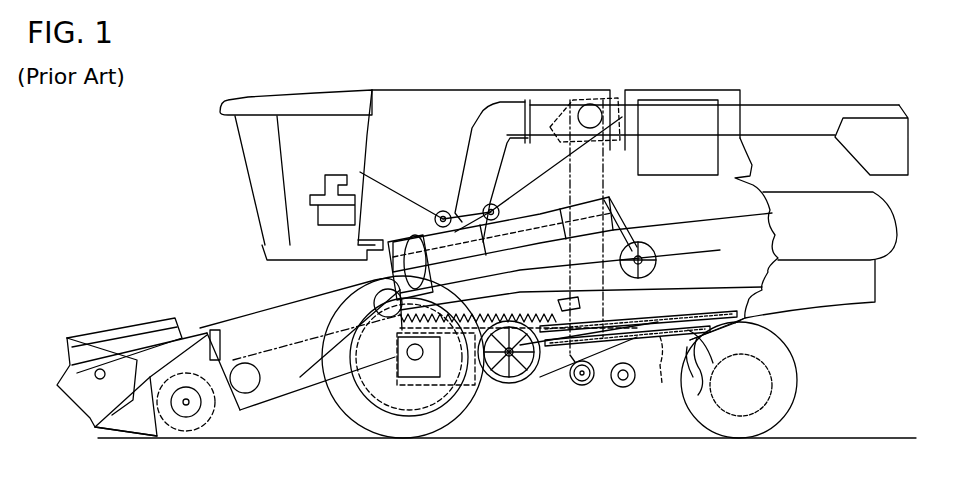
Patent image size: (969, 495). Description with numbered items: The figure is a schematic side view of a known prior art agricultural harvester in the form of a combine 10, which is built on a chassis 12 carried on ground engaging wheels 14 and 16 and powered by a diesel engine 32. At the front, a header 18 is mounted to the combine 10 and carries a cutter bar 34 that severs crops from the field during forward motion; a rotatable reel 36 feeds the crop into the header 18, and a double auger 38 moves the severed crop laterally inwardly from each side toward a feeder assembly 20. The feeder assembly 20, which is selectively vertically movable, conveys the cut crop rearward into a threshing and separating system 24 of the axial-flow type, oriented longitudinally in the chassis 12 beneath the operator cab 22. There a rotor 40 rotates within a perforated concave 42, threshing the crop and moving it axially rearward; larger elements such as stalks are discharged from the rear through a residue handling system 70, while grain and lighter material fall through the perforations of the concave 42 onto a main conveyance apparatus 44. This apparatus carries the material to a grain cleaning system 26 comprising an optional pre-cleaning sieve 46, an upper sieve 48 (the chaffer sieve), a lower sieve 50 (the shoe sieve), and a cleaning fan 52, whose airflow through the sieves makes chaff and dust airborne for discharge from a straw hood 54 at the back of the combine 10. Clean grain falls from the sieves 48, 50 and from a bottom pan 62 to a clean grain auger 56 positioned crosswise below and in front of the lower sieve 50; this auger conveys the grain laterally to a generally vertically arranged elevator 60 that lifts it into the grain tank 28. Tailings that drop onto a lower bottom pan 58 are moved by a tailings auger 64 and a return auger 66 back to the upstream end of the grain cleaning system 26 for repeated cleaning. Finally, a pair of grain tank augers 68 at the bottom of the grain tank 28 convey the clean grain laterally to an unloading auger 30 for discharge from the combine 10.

The combine 10 is at (296, 93).
The chassis 12 is at (750, 323).
The ground engaging wheel 14 is at (347, 410).
The ground engaging wheel 16 is at (797, 395).
The header 18 is at (130, 322).
The feeder assembly 20 is at (273, 322).
The operator cab 22 is at (246, 163).
The threshing and separating system 24 is at (350, 277).
The grain cleaning system 26 is at (554, 393).
The grain tank 28 is at (400, 98).
The unloading auger 30 is at (801, 112).
The diesel engine 32 is at (670, 98).
The cutter bar 34 is at (152, 432).
The rotatable reel 36 is at (63, 367).
The double auger 38 is at (185, 432).
The rotor 40 is at (405, 242).
The perforated concave 42 is at (537, 240).
The main conveyance apparatus 44 is at (400, 340).
The pre-cleaning sieve 46 is at (612, 296).
The upper sieve 48 is at (675, 316).
The lower sieve 50 is at (663, 372).
The cleaning fan 52 is at (509, 384).
The straw hood 54 is at (883, 222).
The clean grain auger 56 is at (585, 388).
The lower bottom pan 58 is at (710, 352).
The elevator 60 is at (608, 180).
The bottom pan 62 is at (702, 383).
The tailings auger 64 is at (628, 388).
The return auger 66 is at (567, 302).
The grain tank augers 68 is at (437, 212).
The residue handling system 70 is at (866, 318).